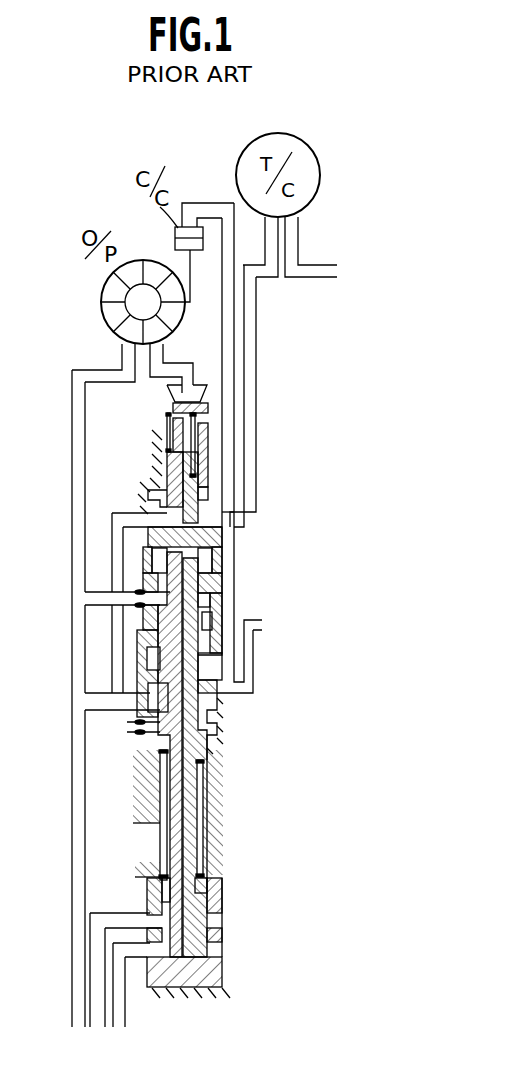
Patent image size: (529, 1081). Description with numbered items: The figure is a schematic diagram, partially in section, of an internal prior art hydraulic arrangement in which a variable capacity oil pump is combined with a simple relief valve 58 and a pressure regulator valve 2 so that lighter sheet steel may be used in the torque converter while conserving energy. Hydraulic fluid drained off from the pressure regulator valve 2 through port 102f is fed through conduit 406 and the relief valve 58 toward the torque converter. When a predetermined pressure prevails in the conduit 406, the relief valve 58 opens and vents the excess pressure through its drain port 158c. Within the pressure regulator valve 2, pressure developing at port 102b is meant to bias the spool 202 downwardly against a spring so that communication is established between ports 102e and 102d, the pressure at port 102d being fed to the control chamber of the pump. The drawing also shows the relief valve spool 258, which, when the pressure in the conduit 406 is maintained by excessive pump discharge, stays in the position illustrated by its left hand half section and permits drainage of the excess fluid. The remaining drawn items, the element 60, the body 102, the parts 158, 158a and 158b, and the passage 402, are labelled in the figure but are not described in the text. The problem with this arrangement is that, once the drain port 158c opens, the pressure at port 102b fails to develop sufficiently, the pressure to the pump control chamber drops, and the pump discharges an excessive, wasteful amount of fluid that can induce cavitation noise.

The pressure regulator valve 2 is at (240, 574).
The relief valve 58 is at (153, 424).
The inlet funnel 60 is at (207, 390).
The piston rod / spool 102 is at (207, 838).
The port 102b is at (150, 592).
The port 102d is at (203, 663).
The port 102e is at (160, 697).
The port 102f is at (215, 727).
The valve body 158 is at (207, 427).
The valve body shoulder 158a is at (167, 518).
The valve body passage 158b is at (228, 512).
The drain port 158c is at (207, 490).
The spool 202 is at (203, 622).
The spool 258 is at (167, 468).
The outer conduit 402 is at (72, 482).
The conduit 406 is at (256, 365).